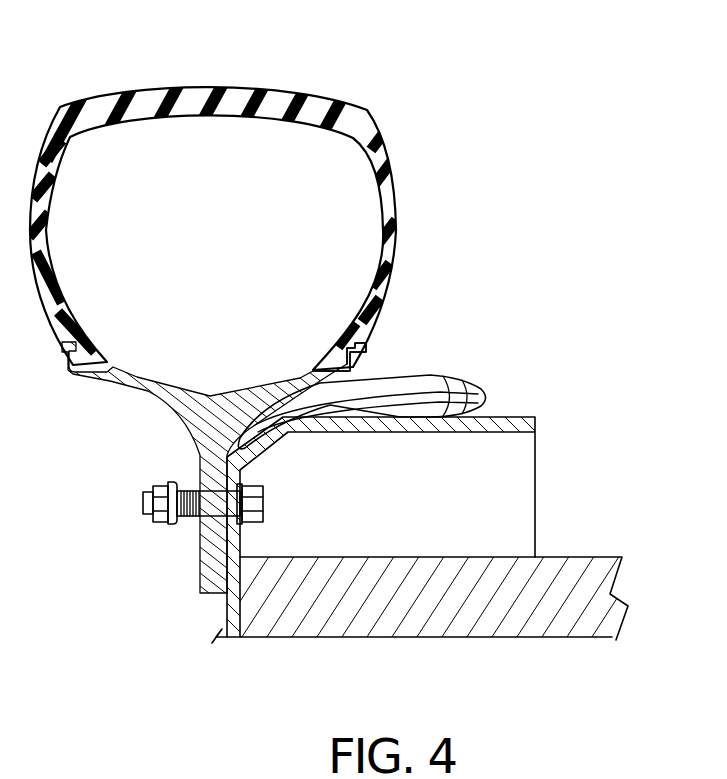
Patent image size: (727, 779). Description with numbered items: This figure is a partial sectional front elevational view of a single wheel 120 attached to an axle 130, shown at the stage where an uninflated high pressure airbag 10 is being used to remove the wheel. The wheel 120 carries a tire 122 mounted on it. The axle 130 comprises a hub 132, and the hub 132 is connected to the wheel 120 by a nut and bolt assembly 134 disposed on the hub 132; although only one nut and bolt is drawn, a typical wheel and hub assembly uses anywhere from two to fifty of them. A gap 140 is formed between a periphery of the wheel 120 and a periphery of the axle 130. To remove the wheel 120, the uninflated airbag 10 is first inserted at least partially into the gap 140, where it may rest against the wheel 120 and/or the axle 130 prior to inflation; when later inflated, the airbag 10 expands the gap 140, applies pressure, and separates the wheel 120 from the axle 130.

The high pressure airbag 10 is at (487, 384).
The wheel 120 is at (368, 342).
The tire 122 is at (348, 100).
The axle 130 is at (426, 556).
The hub 132 is at (375, 434).
The nut and bolt assembly 134 is at (152, 520).
The gap 140 is at (200, 440).